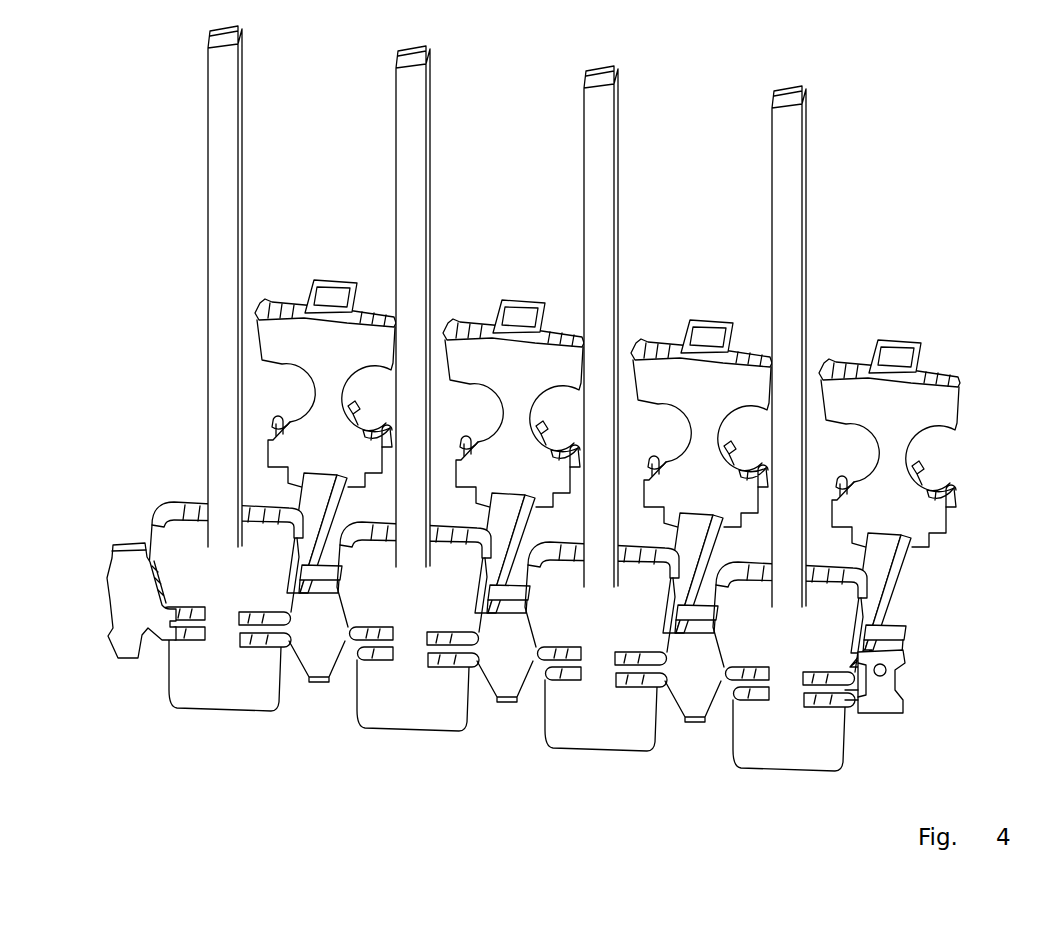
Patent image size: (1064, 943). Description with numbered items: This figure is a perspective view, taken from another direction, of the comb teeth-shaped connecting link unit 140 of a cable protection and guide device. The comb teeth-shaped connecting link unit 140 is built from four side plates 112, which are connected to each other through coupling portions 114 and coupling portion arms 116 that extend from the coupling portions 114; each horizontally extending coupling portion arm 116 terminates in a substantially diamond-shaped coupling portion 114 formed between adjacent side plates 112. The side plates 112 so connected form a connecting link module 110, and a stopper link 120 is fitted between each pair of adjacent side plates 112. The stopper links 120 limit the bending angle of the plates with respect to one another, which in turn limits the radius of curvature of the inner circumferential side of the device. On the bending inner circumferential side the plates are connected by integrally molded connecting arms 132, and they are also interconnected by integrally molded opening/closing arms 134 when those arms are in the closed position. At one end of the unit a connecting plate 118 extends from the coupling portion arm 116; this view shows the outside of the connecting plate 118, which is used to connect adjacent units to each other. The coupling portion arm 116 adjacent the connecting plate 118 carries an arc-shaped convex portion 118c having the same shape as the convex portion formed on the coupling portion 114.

The connecting link module 110 is at (140, 501).
The side plate 112 is at (207, 683).
The coupling portion 114 is at (313, 647).
The coupling portion arm 116 is at (260, 610).
The connecting plate 118 is at (880, 705).
The arc-shaped convex portion 118c is at (853, 703).
The stopper link 120 is at (713, 303).
The connecting arm 132 is at (877, 563).
The opening/closing arm 134 is at (215, 150).
The comb teeth-shaped connecting link unit 140 is at (501, 674).